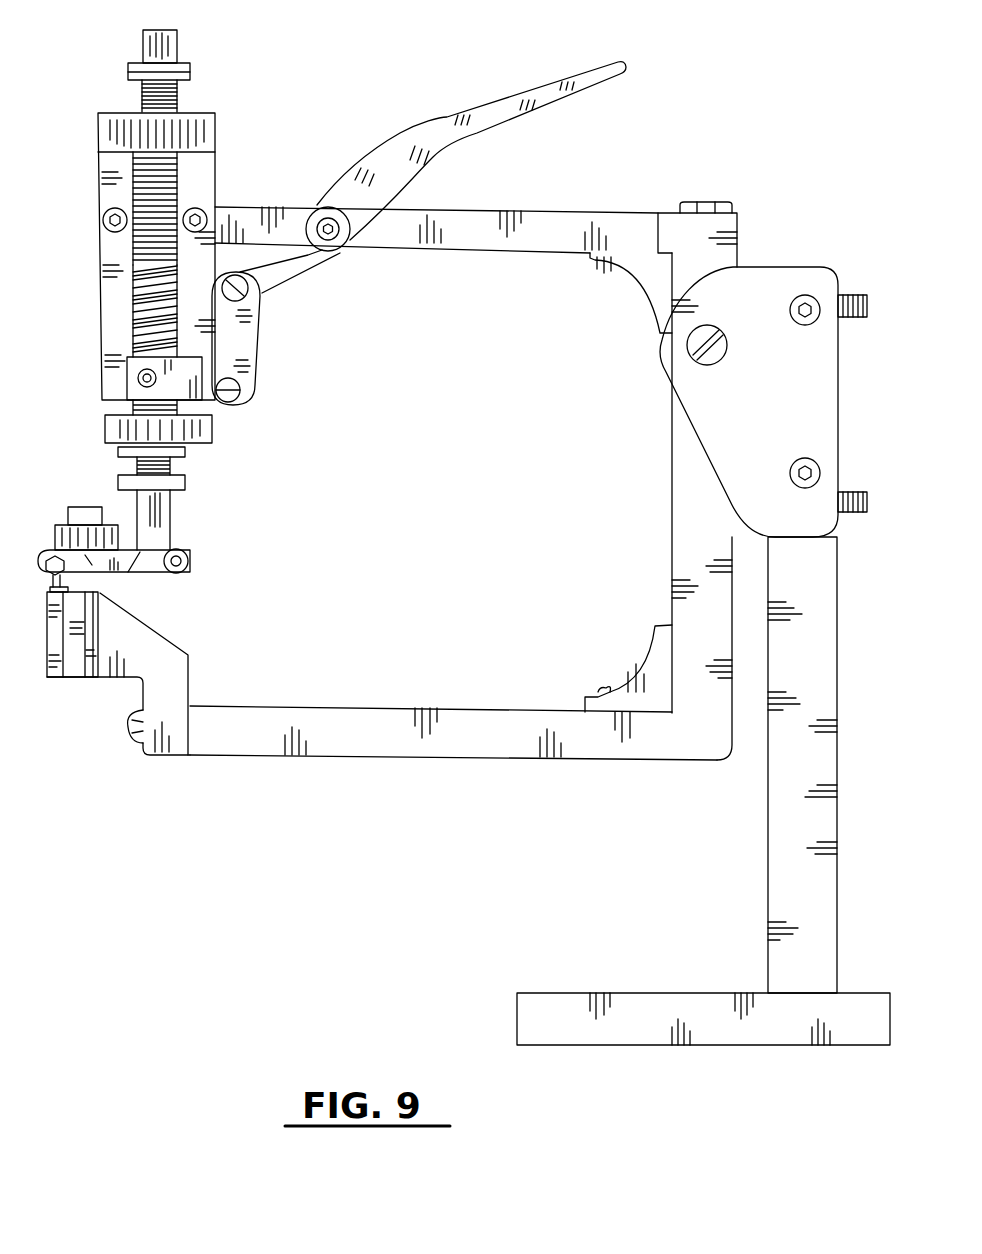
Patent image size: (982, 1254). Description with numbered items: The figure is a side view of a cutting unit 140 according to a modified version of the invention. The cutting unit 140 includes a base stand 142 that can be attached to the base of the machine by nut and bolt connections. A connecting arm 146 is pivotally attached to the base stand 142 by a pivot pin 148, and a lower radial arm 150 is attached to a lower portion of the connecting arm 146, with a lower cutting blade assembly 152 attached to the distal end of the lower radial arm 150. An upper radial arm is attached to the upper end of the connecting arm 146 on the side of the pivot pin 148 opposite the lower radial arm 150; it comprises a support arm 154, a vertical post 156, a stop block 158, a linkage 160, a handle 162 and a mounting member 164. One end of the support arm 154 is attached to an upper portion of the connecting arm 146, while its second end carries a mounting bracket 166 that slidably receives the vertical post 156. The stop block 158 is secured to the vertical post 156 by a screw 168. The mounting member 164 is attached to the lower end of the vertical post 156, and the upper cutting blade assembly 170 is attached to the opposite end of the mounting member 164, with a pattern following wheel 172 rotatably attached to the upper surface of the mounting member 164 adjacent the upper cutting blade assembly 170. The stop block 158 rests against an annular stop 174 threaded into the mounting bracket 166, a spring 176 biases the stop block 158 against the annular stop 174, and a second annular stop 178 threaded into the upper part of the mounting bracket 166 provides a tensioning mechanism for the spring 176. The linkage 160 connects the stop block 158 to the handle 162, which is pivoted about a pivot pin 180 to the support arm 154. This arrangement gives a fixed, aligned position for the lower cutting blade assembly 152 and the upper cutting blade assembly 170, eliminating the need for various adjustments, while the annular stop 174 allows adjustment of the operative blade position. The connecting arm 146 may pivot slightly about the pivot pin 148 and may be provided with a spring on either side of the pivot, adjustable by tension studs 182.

The cutting unit 140 is at (409, 78).
The base stand 142 is at (798, 882).
The connecting arm 146 is at (690, 536).
The pivot pin 148 is at (690, 340).
The lower radial arm 150 is at (390, 717).
The lower cutting blade assembly 152 is at (100, 592).
The support arm 154 is at (535, 230).
The vertical post 156 is at (181, 45).
The stop block 158 is at (210, 400).
The linkage 160 is at (238, 342).
The handle 162 is at (467, 118).
The mounting member 164 is at (173, 540).
The mounting bracket 166 is at (200, 183).
The screw 168 is at (138, 378).
The upper cutting blade assembly 170 is at (48, 576).
The pattern following wheel 172 is at (80, 553).
The annular stop 174 is at (110, 414).
The spring 176 is at (135, 302).
The annular stop 178 is at (142, 96).
The pivot pin 180 is at (333, 242).
The tension studs 182 is at (882, 250).